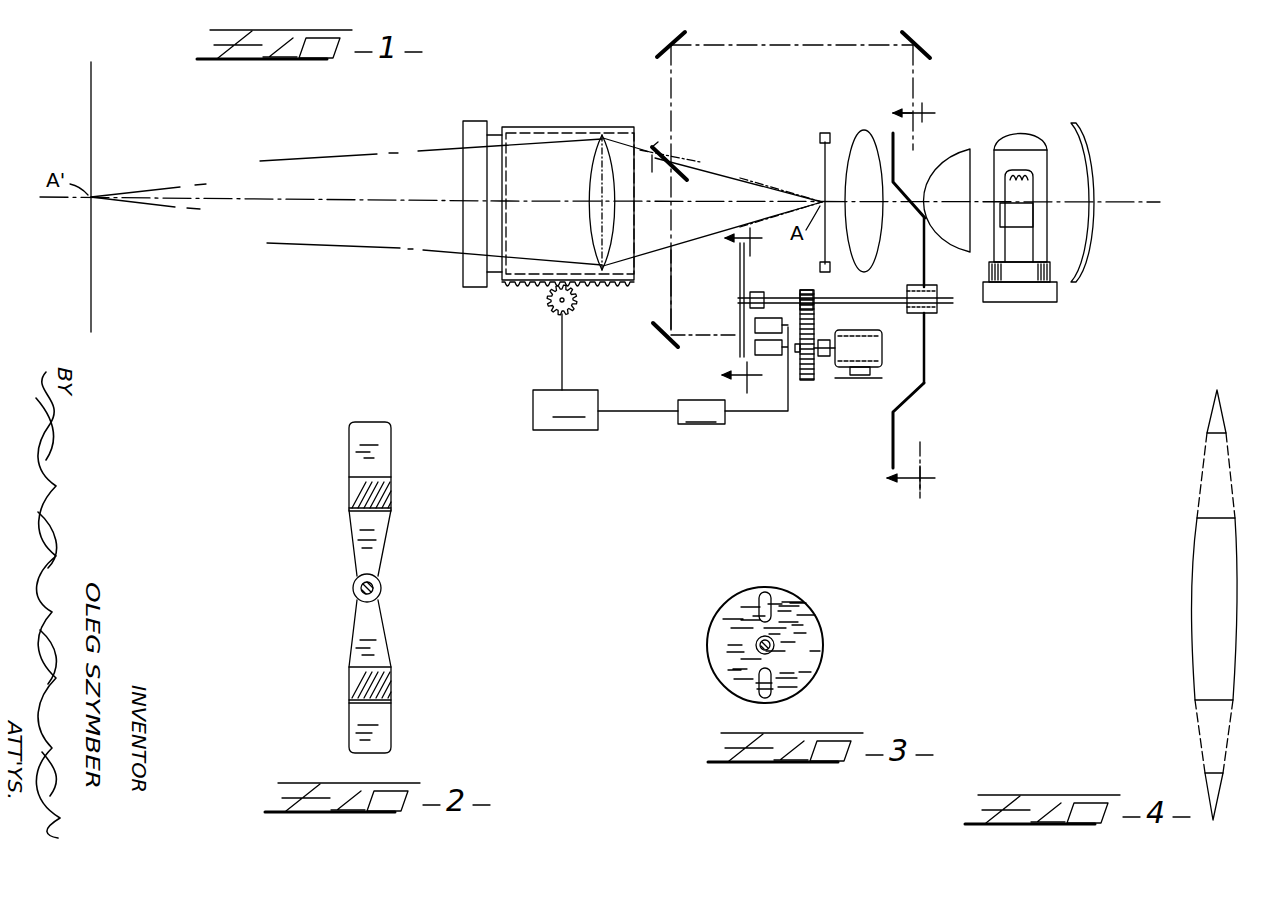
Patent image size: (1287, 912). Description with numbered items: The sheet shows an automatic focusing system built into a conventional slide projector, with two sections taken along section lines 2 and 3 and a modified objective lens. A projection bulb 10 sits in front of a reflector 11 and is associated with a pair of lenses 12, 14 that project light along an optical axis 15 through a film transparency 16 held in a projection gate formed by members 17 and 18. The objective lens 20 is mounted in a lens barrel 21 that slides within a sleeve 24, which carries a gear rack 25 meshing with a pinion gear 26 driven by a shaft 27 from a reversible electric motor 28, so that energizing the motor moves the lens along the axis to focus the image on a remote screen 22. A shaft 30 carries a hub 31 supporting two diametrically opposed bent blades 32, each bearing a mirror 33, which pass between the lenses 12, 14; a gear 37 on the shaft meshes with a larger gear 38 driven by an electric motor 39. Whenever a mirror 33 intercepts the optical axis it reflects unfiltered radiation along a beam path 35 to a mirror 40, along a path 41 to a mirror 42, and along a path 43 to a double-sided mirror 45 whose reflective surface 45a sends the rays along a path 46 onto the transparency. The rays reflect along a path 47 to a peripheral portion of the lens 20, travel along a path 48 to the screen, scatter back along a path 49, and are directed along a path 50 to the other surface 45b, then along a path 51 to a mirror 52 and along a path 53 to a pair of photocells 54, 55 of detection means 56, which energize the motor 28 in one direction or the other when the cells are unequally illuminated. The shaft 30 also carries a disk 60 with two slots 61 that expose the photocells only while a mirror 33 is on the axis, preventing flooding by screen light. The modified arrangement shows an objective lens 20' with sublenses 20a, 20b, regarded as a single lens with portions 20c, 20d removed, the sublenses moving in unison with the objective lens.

In FIG. 1, the projection bulb 10 is at (1012, 132).
In FIG. 1, the reflector 11 is at (1089, 176).
In FIG. 1, the lens 12 is at (962, 156).
In FIG. 1, the lens 14 is at (863, 142).
In FIG. 1, the optical axis 15 is at (415, 198).
In FIG. 1, the film transparency 16 is at (824, 180).
In FIG. 1, the projection gate member 17 is at (818, 137).
In FIG. 1, the projection gate member 18 is at (818, 268).
In FIG. 1, the objective lens 20 is at (580, 202).
In FIG. 4, the objective lens 20' is at (1191, 609).
In FIG. 4, the sublens 20a is at (1210, 426).
In FIG. 4, the sublens 20b is at (1218, 790).
In FIG. 4, the removed lens portion 20c is at (1204, 496).
In FIG. 4, the removed lens portion 20d is at (1208, 740).
In FIG. 1, the lens barrel 21 is at (466, 242).
In FIG. 1, the screen 22 is at (93, 107).
In FIG. 1, the sleeve 24 is at (564, 127).
In FIG. 1, the gear rack 25 is at (590, 288).
In FIG. 1, the pinion gear 26 is at (548, 303).
In FIG. 1, the shaft 27 is at (560, 358).
In FIG. 1, the reversible electric motor 28 is at (565, 410).
In FIG. 1, the shaft 30 is at (868, 298).
In FIG. 2, the shaft 30 is at (361, 588).
In FIG. 3, the shaft 30 is at (771, 643).
In FIG. 1, the hub 31 is at (934, 314).
In FIG. 2, the hub 31 is at (380, 595).
In FIG. 1, the blade 32 is at (926, 268).
In FIG. 2, the blade 32 is at (356, 455).
In FIG. 1, the mirror 33 is at (905, 178).
In FIG. 2, the mirror 33 is at (356, 495).
In FIG. 1, the radiation beam path 35 is at (906, 110).
In FIG. 1, the gear 37 is at (813, 293).
In FIG. 1, the gear 38 is at (808, 382).
In FIG. 1, the electric motor 39 is at (858, 336).
In FIG. 1, the mirror 40 is at (925, 40).
In FIG. 1, the path 41 is at (802, 44).
In FIG. 1, the mirror 42 is at (666, 42).
In FIG. 1, the path 43 is at (672, 110).
In FIG. 1, the mirror 45 is at (688, 181).
In FIG. 1, the reflective surface 45a is at (688, 172).
In FIG. 1, the reflective surface 45b is at (654, 146).
In FIG. 1, the path 46 is at (776, 182).
In FIG. 1, the path 47 is at (726, 228).
In FIG. 1, the path 48 is at (168, 208).
In FIG. 1, the path 49 is at (165, 187).
In FIG. 1, the path 50 is at (648, 175).
In FIG. 1, the path 51 is at (672, 272).
In FIG. 1, the mirror 52 is at (668, 343).
In FIG. 1, the path 53 is at (716, 334).
In FIG. 1, the photocell 54 is at (769, 320).
In FIG. 1, the photocell 55 is at (766, 352).
In FIG. 1, the detection means 56 is at (693, 375).
In FIG. 1, the disk 60 is at (741, 286).
In FIG. 3, the disk 60 is at (815, 651).
In FIG. 3, the slot 61 is at (760, 606).
In FIG. 1, the section line 2— 2 is at (912, 273).
In FIG. 1, the section line 3— 3 is at (743, 312).